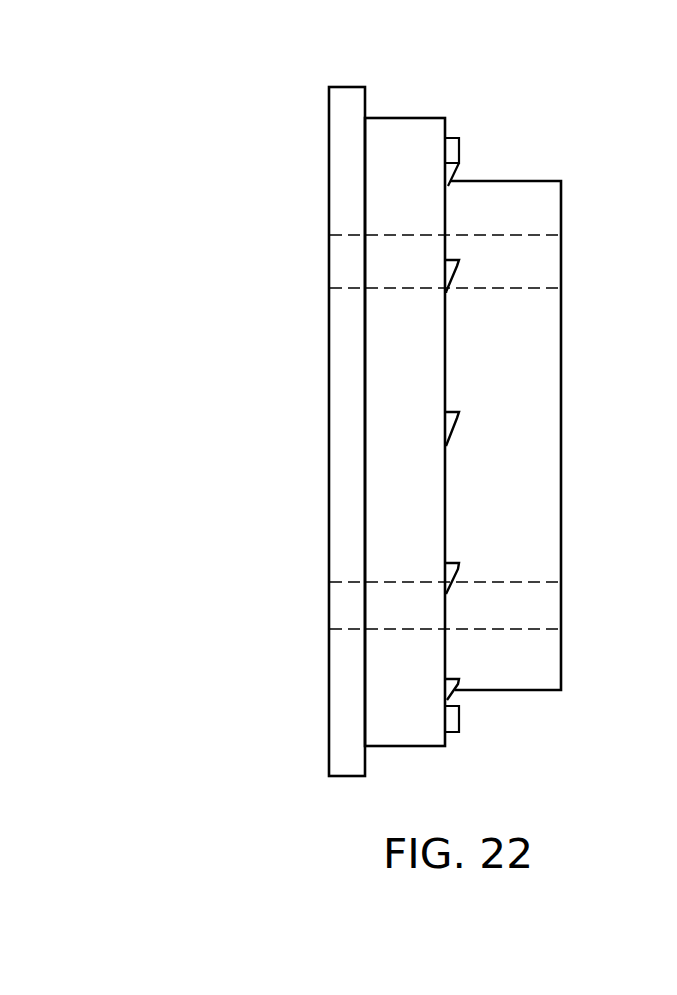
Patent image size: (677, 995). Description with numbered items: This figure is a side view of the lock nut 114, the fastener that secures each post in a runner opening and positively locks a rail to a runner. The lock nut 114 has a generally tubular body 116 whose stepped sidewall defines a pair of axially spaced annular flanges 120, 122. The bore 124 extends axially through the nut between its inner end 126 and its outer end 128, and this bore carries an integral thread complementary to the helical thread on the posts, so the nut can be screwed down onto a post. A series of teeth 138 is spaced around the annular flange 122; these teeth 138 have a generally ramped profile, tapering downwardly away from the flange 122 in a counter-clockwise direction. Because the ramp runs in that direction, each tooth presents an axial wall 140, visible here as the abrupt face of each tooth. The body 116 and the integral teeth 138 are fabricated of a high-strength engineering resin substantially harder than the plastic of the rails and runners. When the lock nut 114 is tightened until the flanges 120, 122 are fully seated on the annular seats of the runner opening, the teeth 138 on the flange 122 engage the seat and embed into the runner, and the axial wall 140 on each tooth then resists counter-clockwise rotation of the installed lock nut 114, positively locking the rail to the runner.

The lock nut 114 is at (288, 603).
The tubular body 116 is at (514, 196).
The annular flange 120 is at (366, 100).
The annular flange 122 is at (446, 742).
The bore 124 is at (535, 288).
The inner end 126 is at (552, 662).
The outer end 128 is at (328, 718).
The teeth 138 is at (460, 270).
The axial wall 140 is at (460, 150).